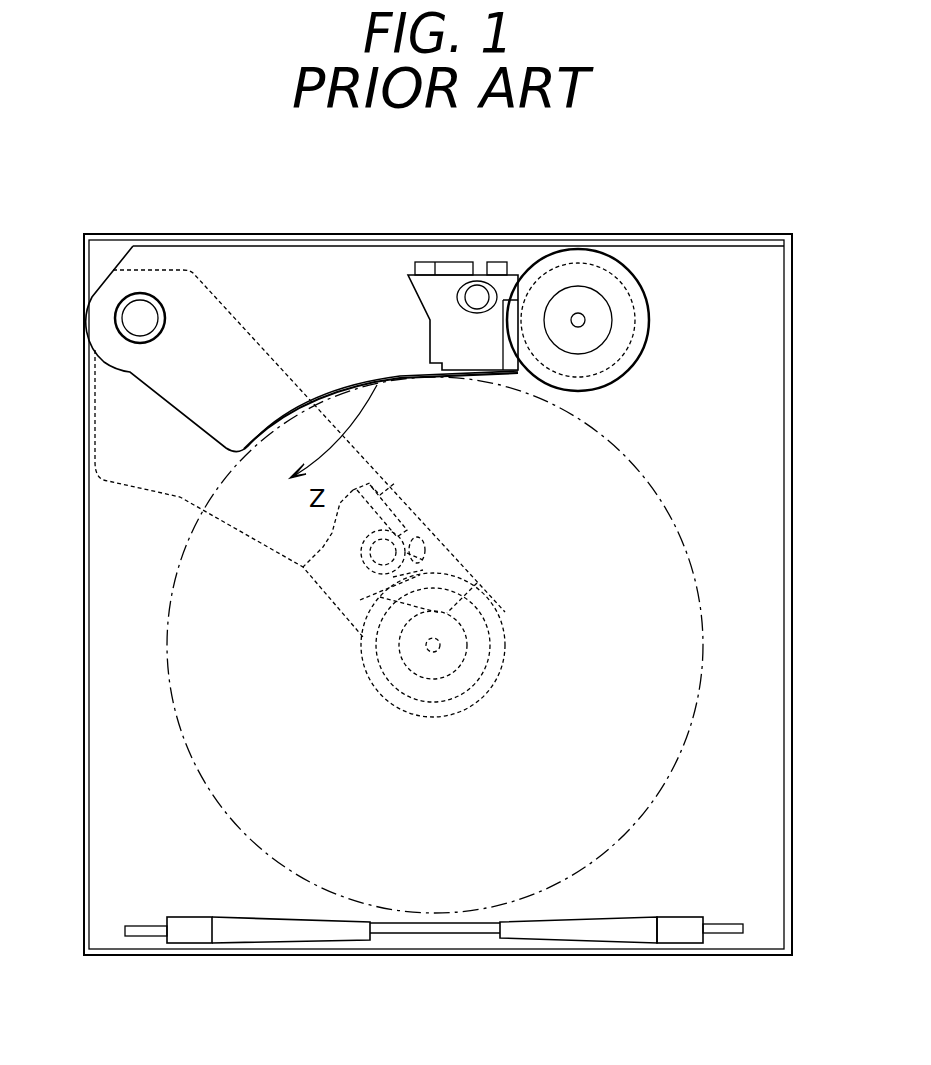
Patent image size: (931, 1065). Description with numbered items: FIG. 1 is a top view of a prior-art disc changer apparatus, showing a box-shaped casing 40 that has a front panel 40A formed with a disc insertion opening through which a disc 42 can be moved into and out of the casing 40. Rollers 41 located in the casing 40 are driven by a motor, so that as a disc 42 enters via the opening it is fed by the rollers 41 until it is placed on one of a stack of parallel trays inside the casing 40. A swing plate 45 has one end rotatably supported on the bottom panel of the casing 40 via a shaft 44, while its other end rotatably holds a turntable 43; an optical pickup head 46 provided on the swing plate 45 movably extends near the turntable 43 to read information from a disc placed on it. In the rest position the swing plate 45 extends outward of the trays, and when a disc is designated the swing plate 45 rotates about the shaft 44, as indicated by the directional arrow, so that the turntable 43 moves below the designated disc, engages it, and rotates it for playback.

The casing 40 is at (792, 577).
The front panel 40A is at (630, 957).
The rollers 41 is at (552, 930).
The disc 42 is at (640, 740).
The turntable 43 is at (610, 285).
The shaft 44 is at (143, 311).
The swing plate 45 is at (312, 268).
The optical pickup head 46 is at (480, 292).